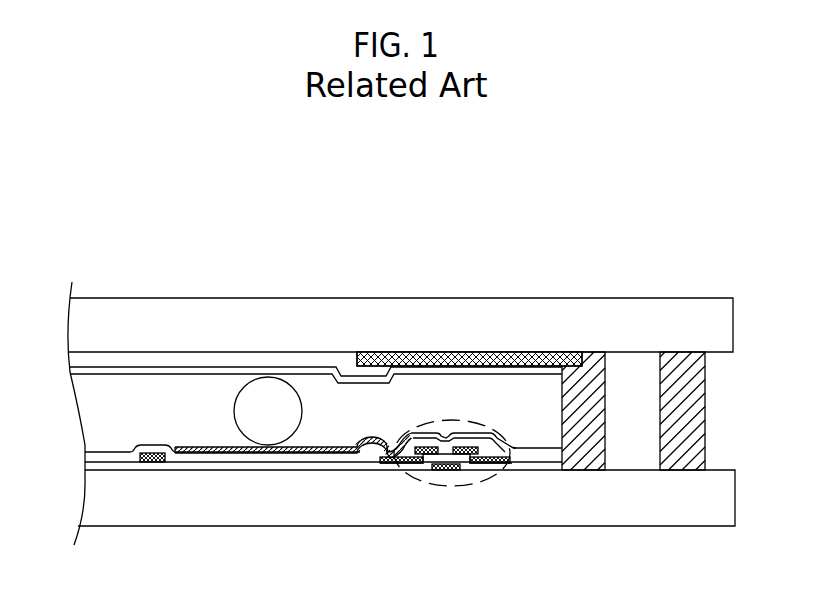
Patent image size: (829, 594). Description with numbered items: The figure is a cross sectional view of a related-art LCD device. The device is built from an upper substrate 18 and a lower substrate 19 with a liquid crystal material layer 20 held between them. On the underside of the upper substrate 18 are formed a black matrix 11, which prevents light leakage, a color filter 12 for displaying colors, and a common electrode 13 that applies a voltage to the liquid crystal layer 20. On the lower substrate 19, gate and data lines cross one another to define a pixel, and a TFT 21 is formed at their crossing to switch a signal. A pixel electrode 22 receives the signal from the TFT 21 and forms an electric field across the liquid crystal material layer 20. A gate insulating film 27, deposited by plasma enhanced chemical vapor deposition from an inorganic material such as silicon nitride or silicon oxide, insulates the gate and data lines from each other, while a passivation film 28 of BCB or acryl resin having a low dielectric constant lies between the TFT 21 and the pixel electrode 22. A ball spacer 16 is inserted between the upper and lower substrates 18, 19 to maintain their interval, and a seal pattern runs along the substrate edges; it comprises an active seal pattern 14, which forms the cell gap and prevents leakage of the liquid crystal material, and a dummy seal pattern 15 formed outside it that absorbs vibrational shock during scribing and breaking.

The black matrix 11 is at (455, 352).
The color filter 12 is at (243, 358).
The common electrode 13 is at (70, 372).
The active seal pattern 14 is at (598, 412).
The dummy seal pattern 15 is at (698, 412).
The ball spacer 16 is at (233, 411).
The upper substrate 18 is at (726, 325).
The lower substrate 19 is at (85, 500).
The liquid crystal material layer 20 is at (83, 414).
The TFT 21 is at (475, 422).
The pixel electrode 22 is at (316, 454).
The gate insulating film 27 is at (85, 465).
The passivation film 28 is at (109, 456).